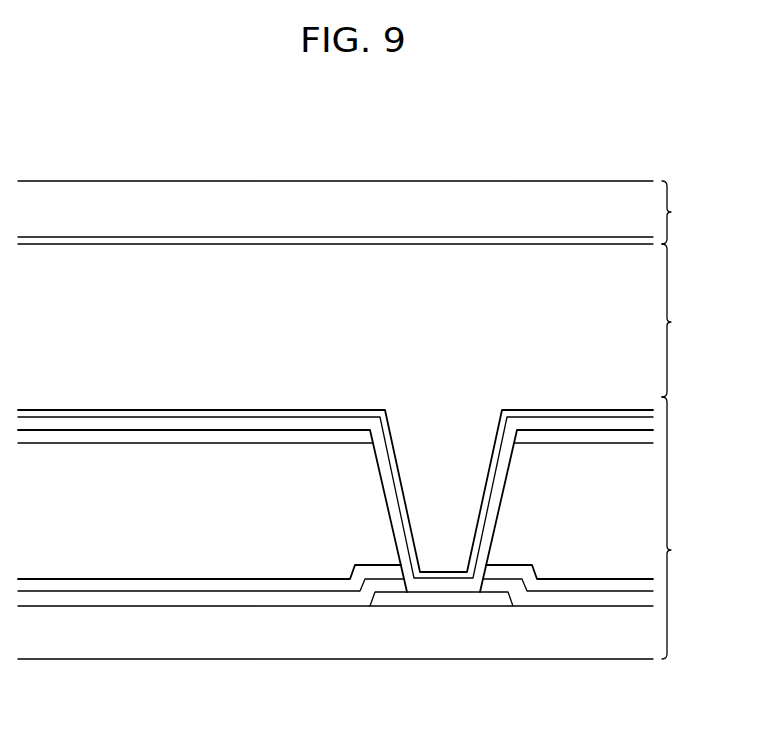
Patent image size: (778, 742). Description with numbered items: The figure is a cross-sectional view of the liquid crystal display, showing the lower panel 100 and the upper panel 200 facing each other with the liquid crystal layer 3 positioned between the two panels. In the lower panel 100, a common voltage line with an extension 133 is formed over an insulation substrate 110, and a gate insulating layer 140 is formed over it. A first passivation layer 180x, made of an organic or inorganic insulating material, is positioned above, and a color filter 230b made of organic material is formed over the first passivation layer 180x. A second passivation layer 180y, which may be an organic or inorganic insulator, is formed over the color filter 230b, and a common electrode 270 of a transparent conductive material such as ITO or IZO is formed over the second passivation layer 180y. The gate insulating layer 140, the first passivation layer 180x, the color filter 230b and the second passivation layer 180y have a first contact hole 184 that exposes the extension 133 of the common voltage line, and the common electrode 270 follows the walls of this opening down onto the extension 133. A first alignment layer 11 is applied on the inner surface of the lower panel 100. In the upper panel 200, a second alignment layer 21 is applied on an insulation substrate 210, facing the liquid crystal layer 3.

The insulation substrate 210 is at (74, 203).
The second alignment layer 21 is at (158, 243).
The second passivation layer 180y is at (243, 437).
The common electrode 270 is at (335, 423).
The first contact hole 184 is at (380, 478).
The first alignment layer 11 is at (575, 411).
The color filter 230b is at (165, 558).
The first passivation layer 180x is at (265, 585).
The gate insulating layer 140 is at (338, 607).
The extension 133 is at (440, 600).
The insulation substrate 110 is at (535, 642).
The upper panel 200 is at (686, 212).
The liquid crystal layer 3 is at (673, 320).
The lower panel 100 is at (687, 528).